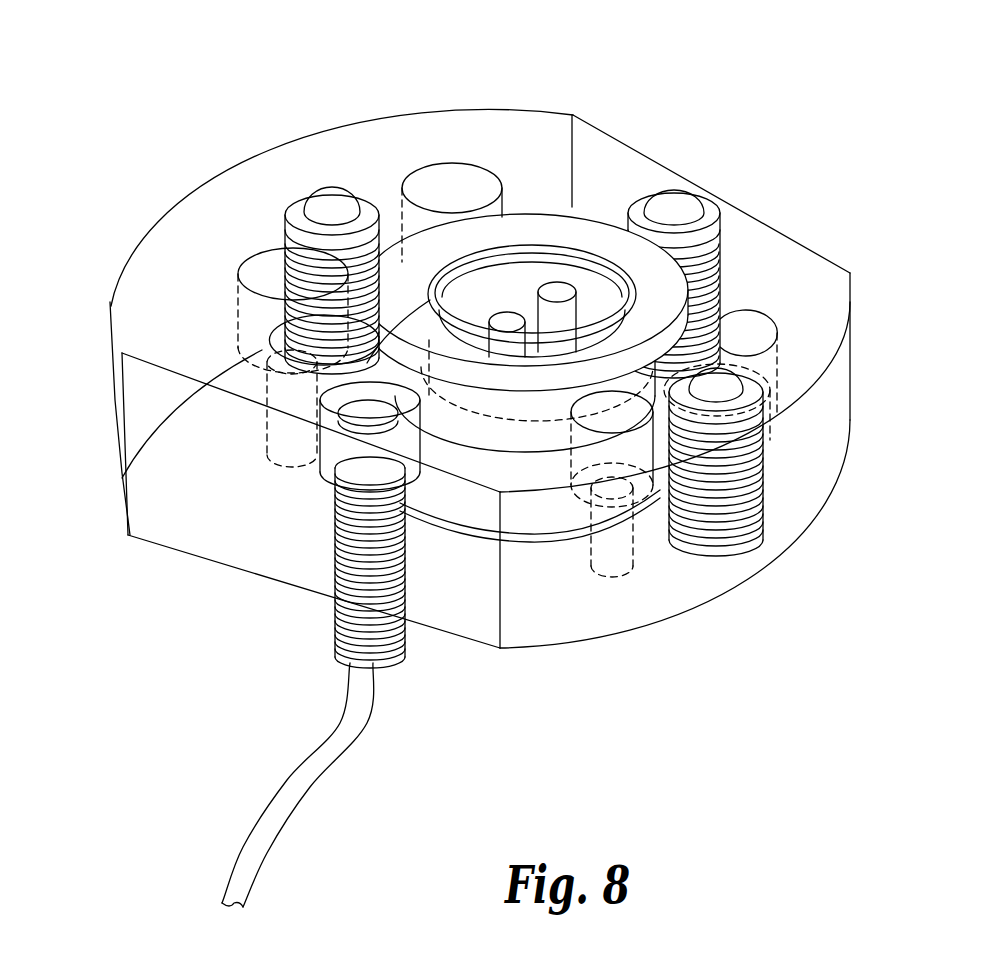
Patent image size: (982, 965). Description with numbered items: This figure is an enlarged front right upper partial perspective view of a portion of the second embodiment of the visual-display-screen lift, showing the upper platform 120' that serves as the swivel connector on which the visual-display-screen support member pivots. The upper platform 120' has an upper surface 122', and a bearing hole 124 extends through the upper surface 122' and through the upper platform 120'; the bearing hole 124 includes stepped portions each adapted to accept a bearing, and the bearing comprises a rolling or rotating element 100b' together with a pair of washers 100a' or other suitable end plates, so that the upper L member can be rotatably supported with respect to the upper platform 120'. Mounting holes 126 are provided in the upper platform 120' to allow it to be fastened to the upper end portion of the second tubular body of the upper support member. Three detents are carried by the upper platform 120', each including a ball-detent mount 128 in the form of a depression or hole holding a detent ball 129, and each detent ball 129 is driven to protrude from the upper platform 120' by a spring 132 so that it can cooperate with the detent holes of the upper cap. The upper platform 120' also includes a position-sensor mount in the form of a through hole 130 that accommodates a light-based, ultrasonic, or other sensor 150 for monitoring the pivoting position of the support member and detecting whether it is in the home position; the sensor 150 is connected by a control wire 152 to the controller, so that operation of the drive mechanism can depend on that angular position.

The upper platform 120' is at (480, 469).
The upper surface 122' is at (443, 300).
The washers 100a' is at (546, 239).
The rolling or rotating element 100b' is at (546, 210).
The bearing hole 124 is at (760, 542).
The mounting holes 126 is at (400, 262).
The ball-detent mount 128 is at (285, 247).
The detent ball 129 is at (330, 200).
The through hole 130 is at (412, 430).
The spring 132 is at (286, 253).
The sensor 150 is at (357, 457).
The control wire 152 is at (307, 780).